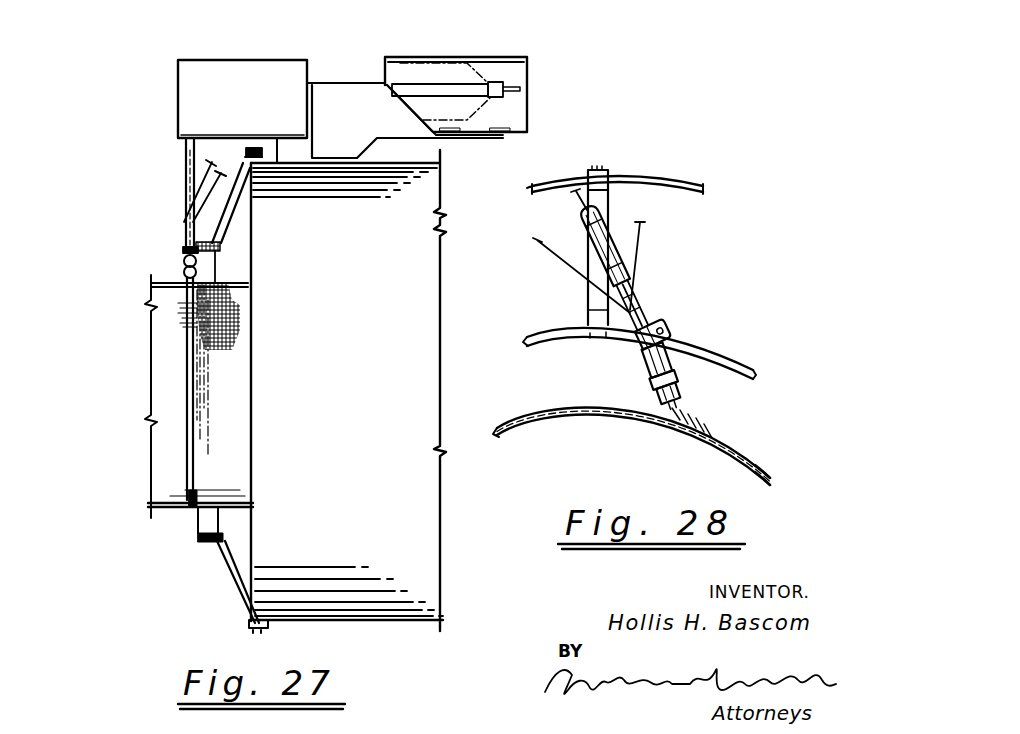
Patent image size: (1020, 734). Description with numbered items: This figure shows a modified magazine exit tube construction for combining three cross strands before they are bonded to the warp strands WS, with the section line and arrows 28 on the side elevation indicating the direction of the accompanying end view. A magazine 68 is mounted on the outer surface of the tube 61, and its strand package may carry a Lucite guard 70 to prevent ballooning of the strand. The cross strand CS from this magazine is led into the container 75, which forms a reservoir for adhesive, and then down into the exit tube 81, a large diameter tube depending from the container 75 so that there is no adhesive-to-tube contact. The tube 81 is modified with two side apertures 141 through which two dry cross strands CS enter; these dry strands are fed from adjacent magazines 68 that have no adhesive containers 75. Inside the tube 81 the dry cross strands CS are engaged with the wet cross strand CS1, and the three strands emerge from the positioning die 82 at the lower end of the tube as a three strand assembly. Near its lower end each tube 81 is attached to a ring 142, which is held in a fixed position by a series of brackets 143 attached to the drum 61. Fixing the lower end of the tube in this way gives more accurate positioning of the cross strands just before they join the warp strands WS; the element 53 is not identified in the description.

In FIG. 27, the section line 28 is at (78, 148).
In FIG. 27, the magazine 68 is at (175, 48).
In FIG. 27, the container 75 is at (232, 70).
In FIG. 27, the Lucite guard 70 is at (476, 60).
In FIG. 27, the tube 61 is at (437, 215).
In FIG. 28, the tube 61 is at (678, 152).
In FIG. 27, the bracket 143 is at (234, 222).
In FIG. 27, the cross strand CS is at (195, 166).
In FIG. 28, the cross strand CS is at (538, 240).
In FIG. 28, the wet cross strand CS1 is at (578, 193).
In FIG. 27, the exit tube 81 is at (185, 192).
In FIG. 28, the exit tube 81 is at (652, 322).
In FIG. 28, the side aperture 141 is at (640, 294).
In FIG. 28, the ring 142 is at (735, 364).
In FIG. 28, the forming die 82 is at (680, 380).
In FIG. 28, the warp strand WS is at (673, 412).
In FIG. 28, the wall 53 is at (768, 477).